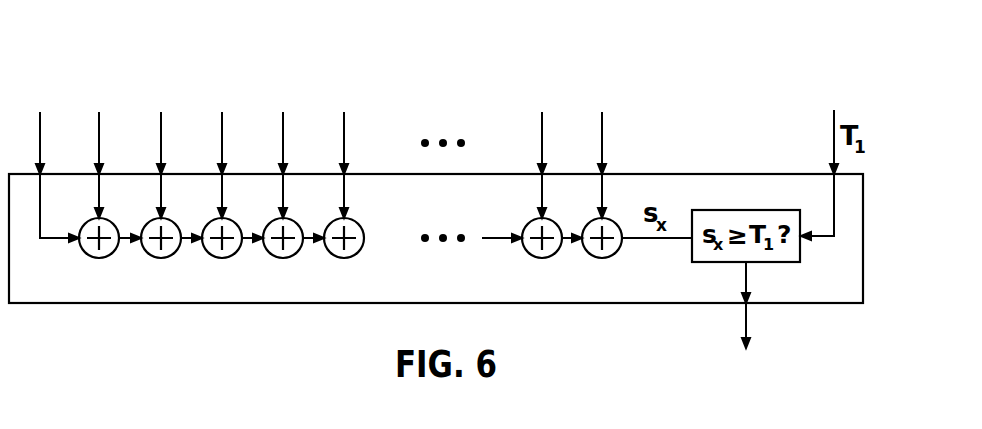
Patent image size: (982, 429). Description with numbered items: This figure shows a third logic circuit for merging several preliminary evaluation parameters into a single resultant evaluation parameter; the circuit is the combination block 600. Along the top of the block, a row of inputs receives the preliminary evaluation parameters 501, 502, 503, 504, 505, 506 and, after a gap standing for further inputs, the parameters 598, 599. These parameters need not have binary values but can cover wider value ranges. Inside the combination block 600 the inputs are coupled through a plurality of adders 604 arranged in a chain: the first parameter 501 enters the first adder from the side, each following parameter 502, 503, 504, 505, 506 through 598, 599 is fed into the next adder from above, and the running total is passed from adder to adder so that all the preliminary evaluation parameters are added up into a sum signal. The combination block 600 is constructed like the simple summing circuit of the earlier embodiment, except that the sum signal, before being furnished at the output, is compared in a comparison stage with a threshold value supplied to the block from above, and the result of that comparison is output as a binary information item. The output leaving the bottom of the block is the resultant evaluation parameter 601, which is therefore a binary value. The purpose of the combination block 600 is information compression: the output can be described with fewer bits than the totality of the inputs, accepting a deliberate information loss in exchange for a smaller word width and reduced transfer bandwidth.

The preliminary evaluation parameter 501 is at (59, 177).
The preliminary evaluation parameter 502 is at (119, 165).
The preliminary evaluation parameter 503 is at (180, 165).
The preliminary evaluation parameter 504 is at (242, 165).
The preliminary evaluation parameter 505 is at (303, 165).
The preliminary evaluation parameter 506 is at (363, 165).
The preliminary evaluation parameter 598 is at (561, 165).
The preliminary evaluation parameter 599 is at (622, 165).
The combination block 600 is at (42, 305).
The resultant evaluation parameter 601 is at (767, 305).
The adder 604 is at (107, 257).